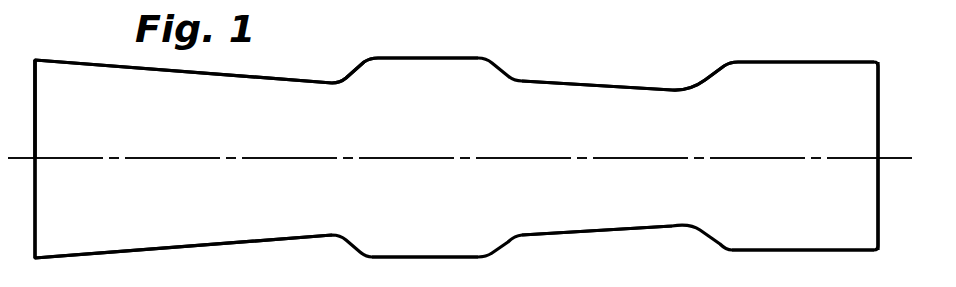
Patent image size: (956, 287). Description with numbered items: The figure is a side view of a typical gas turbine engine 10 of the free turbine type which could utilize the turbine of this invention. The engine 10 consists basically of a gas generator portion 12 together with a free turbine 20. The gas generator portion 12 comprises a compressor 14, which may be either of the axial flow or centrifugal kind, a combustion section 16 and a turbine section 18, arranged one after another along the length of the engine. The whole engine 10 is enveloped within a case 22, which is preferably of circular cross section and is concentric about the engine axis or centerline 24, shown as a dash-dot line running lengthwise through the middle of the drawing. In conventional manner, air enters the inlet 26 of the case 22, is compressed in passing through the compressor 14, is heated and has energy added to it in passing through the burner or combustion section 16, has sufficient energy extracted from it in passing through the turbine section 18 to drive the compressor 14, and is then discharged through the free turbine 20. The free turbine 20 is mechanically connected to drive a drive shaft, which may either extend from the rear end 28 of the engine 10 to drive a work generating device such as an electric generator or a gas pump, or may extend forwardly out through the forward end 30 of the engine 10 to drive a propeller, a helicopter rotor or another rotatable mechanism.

The gas turbine engine 10 is at (585, 68).
The gas generator portion 12 is at (300, 97).
The compressor 14 is at (226, 141).
The combustion section 16 is at (440, 145).
The turbine section 18 is at (611, 145).
The free turbine 20 is at (823, 145).
The case 22 is at (677, 89).
The engine axis 24 is at (70, 160).
The inlet 26 is at (36, 66).
The rear end 28 is at (887, 33).
The forward end 30 is at (36, 137).